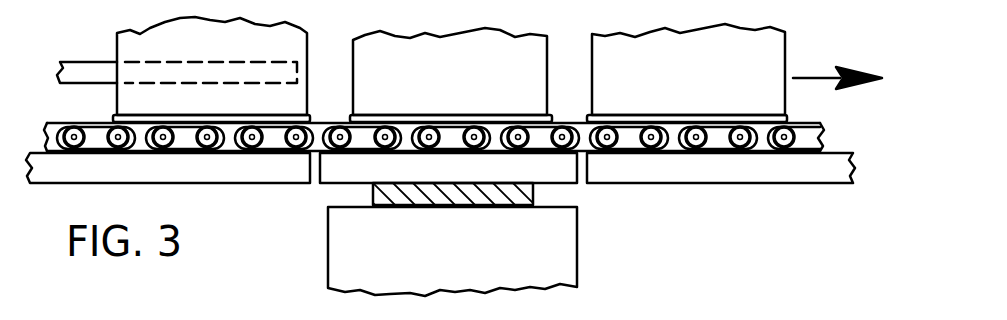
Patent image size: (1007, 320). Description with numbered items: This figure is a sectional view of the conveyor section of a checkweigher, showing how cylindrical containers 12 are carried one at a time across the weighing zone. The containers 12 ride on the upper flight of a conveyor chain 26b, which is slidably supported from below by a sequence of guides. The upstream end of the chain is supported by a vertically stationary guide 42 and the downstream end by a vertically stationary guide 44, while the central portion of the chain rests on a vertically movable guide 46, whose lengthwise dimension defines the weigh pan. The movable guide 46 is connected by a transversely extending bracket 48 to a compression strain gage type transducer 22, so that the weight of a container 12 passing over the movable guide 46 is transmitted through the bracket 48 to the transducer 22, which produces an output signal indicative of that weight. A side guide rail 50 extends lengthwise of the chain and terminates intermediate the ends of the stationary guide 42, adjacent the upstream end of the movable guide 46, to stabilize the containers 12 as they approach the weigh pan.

The cylindrical container 12 is at (231, 52).
The side guide rail 50 is at (92, 62).
The conveyor chain 26b is at (627, 140).
The vertically stationary guide 42 is at (213, 172).
The vertically movable guide 46 is at (333, 174).
The vertically stationary guide 44 is at (743, 175).
The bracket 48 is at (438, 200).
The transducer 22 is at (590, 267).